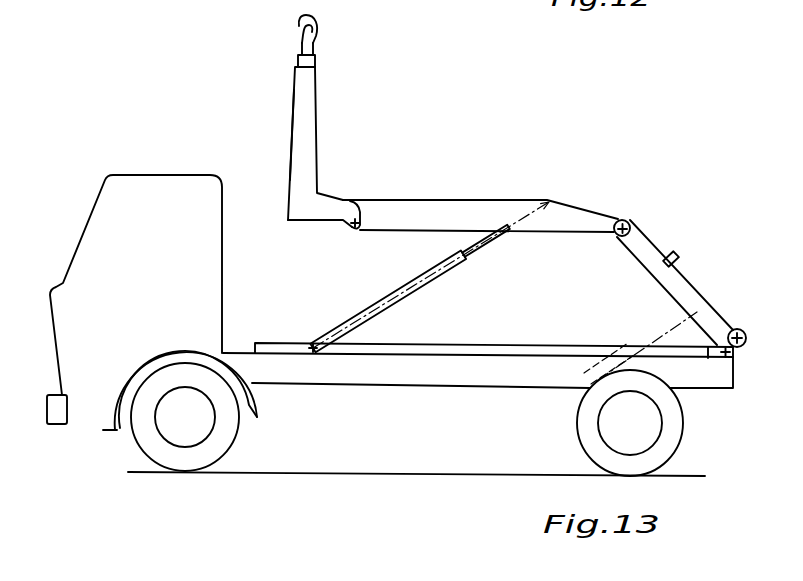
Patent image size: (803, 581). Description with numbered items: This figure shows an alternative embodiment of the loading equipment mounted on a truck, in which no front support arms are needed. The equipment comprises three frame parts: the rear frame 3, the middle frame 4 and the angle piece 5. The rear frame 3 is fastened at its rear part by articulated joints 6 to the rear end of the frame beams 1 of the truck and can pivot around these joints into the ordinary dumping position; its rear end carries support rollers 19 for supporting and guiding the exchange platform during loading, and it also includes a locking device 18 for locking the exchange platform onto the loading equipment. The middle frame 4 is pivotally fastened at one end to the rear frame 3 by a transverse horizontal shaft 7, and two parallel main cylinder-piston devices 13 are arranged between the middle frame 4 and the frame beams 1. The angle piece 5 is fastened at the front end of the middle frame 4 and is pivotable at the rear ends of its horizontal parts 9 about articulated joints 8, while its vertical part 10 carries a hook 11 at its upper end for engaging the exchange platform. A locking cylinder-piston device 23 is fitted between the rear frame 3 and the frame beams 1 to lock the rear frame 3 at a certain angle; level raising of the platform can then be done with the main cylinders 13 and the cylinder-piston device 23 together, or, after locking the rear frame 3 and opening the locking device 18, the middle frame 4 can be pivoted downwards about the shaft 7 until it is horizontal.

The frame beams 1 is at (405, 378).
The rear frame 3 is at (697, 298).
The middle frame 4 is at (468, 208).
The angle piece 5 is at (320, 138).
The articulated joints 6 is at (728, 360).
The transverse horizontal shaft 7 is at (612, 242).
The articulated joints 8 is at (353, 232).
The horizontal parts 9 is at (320, 212).
The vertical part 10 is at (297, 107).
The hook 11 is at (318, 25).
The main cylinder-piston devices 13 is at (413, 293).
The locking device 18 is at (675, 248).
The support rollers 19 is at (746, 330).
The cylinder-piston device 23 is at (637, 347).